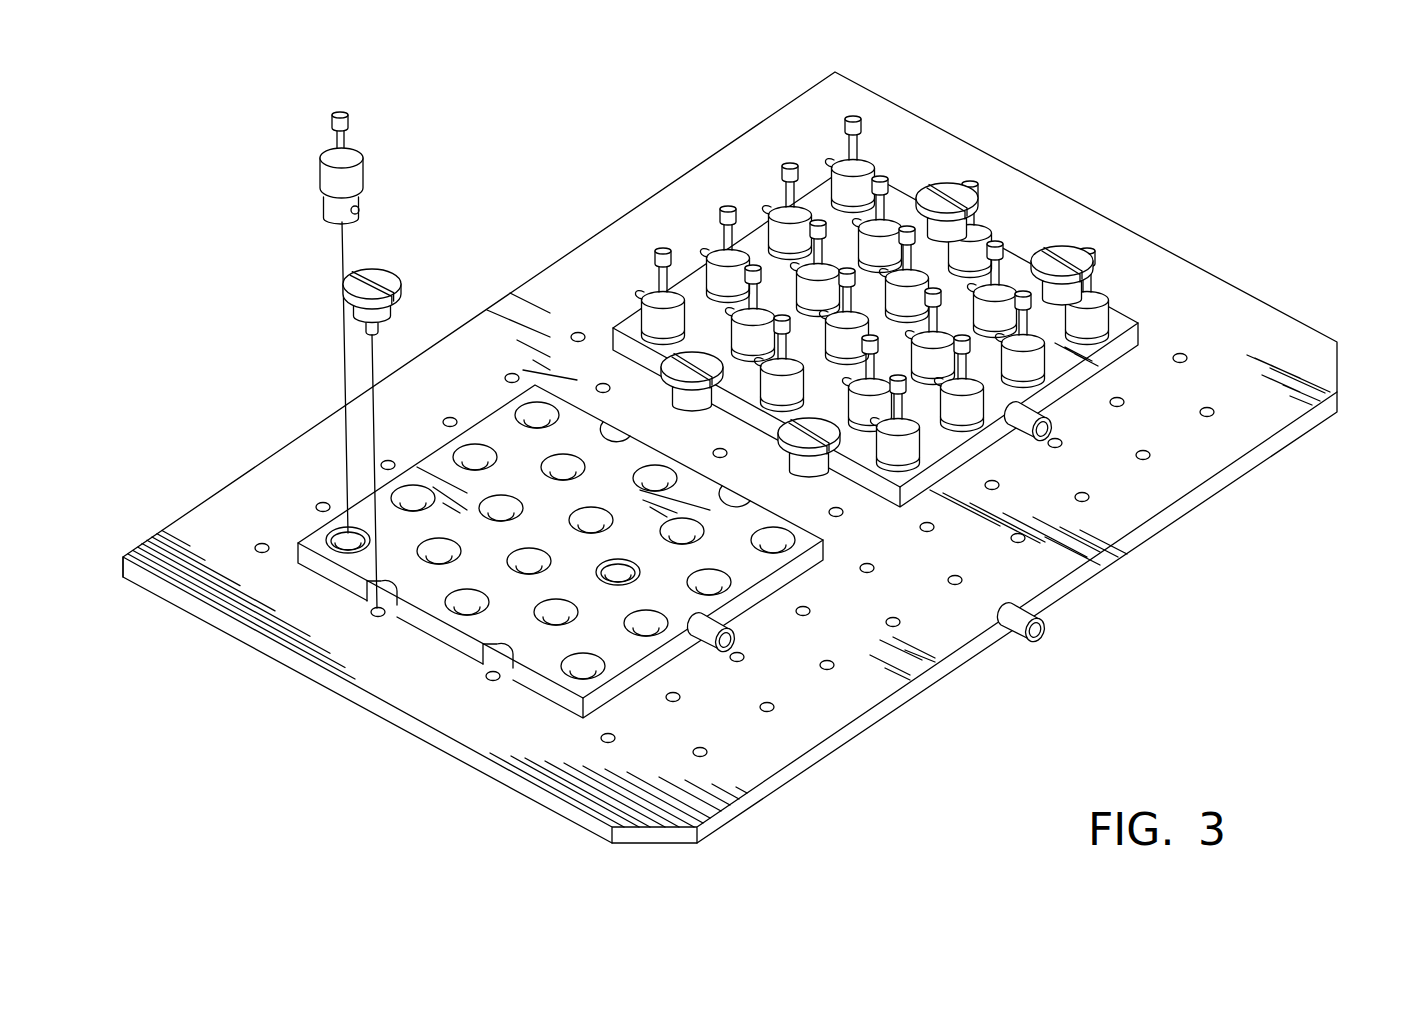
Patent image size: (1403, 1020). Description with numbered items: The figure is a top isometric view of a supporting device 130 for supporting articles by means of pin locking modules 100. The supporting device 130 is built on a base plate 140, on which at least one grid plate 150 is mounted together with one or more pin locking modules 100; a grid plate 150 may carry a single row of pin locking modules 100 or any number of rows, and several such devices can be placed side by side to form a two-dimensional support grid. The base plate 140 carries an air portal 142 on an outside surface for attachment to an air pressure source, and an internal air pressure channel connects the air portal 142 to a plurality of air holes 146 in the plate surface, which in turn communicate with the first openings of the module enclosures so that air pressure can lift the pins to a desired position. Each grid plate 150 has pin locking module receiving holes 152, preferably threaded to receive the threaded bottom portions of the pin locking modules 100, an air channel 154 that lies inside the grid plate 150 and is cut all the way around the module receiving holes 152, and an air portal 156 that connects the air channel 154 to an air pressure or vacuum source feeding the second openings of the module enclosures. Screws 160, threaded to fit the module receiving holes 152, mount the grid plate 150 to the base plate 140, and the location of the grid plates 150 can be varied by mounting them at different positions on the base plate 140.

The pin locking module 100 is at (327, 180).
The supporting device 130 is at (1168, 210).
The base plate 140 is at (243, 606).
The air portal 142 is at (1045, 632).
The air holes 146 is at (263, 542).
The grid plate 150 is at (502, 422).
The pin locking module receiving holes 152 is at (463, 601).
The air channel 154 is at (613, 583).
The air portal 156 is at (740, 646).
The screws 160 is at (945, 187).